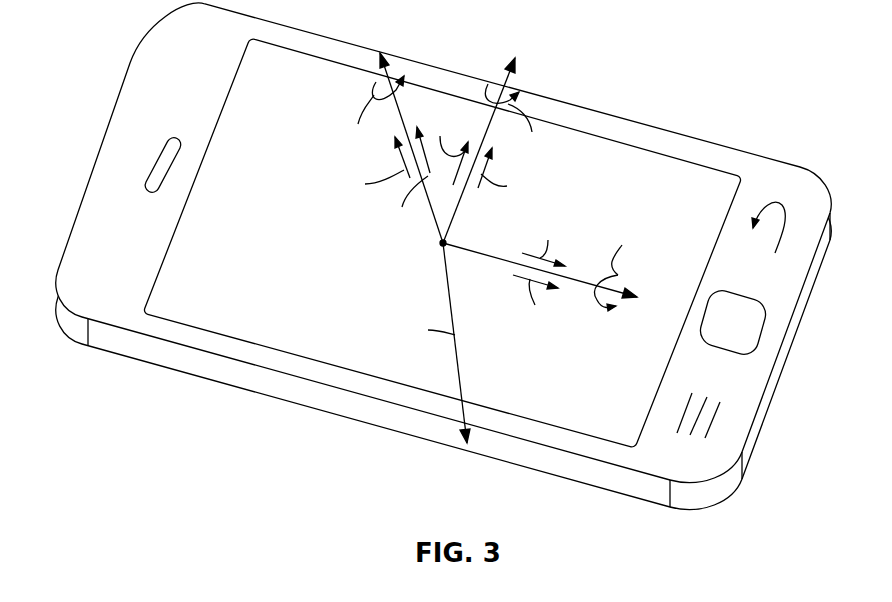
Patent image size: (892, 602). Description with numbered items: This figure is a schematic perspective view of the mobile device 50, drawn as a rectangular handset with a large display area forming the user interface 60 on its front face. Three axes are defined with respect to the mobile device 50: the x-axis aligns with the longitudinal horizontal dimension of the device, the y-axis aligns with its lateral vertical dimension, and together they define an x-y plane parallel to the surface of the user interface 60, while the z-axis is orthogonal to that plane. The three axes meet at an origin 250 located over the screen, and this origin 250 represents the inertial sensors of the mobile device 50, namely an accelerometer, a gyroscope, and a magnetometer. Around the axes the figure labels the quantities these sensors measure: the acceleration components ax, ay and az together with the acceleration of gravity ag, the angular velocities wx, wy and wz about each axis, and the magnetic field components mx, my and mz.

The mobile device 50 is at (646, 86).
The user interface 60 is at (212, 312).
The origin 250 is at (438, 249).